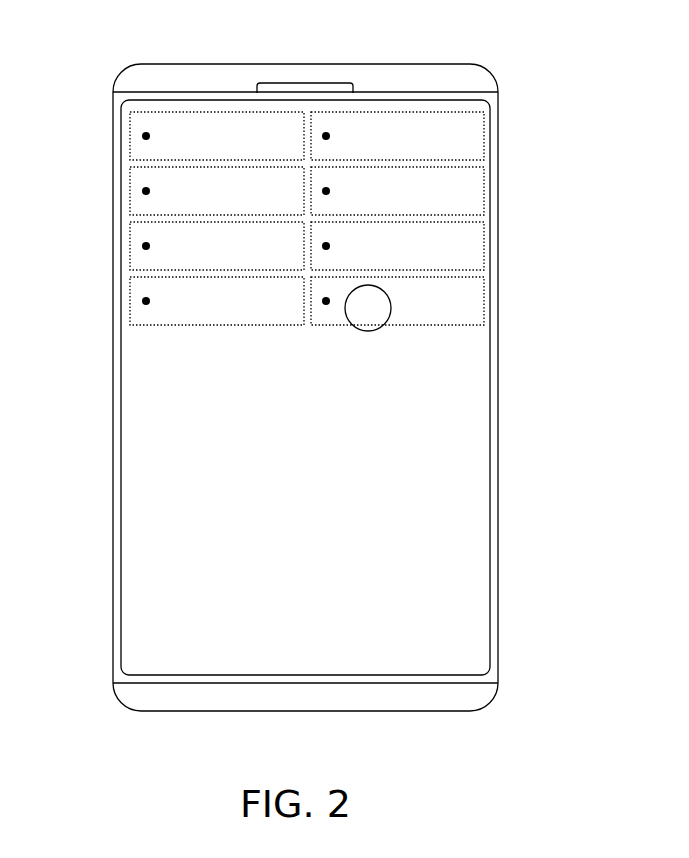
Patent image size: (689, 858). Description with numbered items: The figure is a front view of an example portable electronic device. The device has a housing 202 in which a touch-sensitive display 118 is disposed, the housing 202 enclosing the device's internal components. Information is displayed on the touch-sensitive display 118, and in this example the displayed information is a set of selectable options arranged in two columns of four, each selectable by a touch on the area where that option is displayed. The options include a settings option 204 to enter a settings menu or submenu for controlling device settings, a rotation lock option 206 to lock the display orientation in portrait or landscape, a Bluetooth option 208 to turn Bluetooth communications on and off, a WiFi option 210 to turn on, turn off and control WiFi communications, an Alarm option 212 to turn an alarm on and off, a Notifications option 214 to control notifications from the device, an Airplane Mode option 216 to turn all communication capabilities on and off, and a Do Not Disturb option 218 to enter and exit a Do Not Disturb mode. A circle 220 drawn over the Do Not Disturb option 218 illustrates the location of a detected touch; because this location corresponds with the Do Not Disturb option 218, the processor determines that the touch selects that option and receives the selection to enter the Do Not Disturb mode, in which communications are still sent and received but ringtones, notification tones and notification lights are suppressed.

The touch-sensitive display 118 is at (462, 488).
The housing 202 is at (462, 73).
The settings option 204 is at (140, 147).
The rotation lock option 206 is at (470, 148).
The Bluetooth option 208 is at (138, 203).
The WiFi option 210 is at (468, 205).
The Alarm option 212 is at (142, 265).
The Notifications option 214 is at (468, 258).
The Airplane Mode option 216 is at (137, 312).
The Do Not Disturb option 218 is at (468, 305).
The circle 220 is at (389, 318).